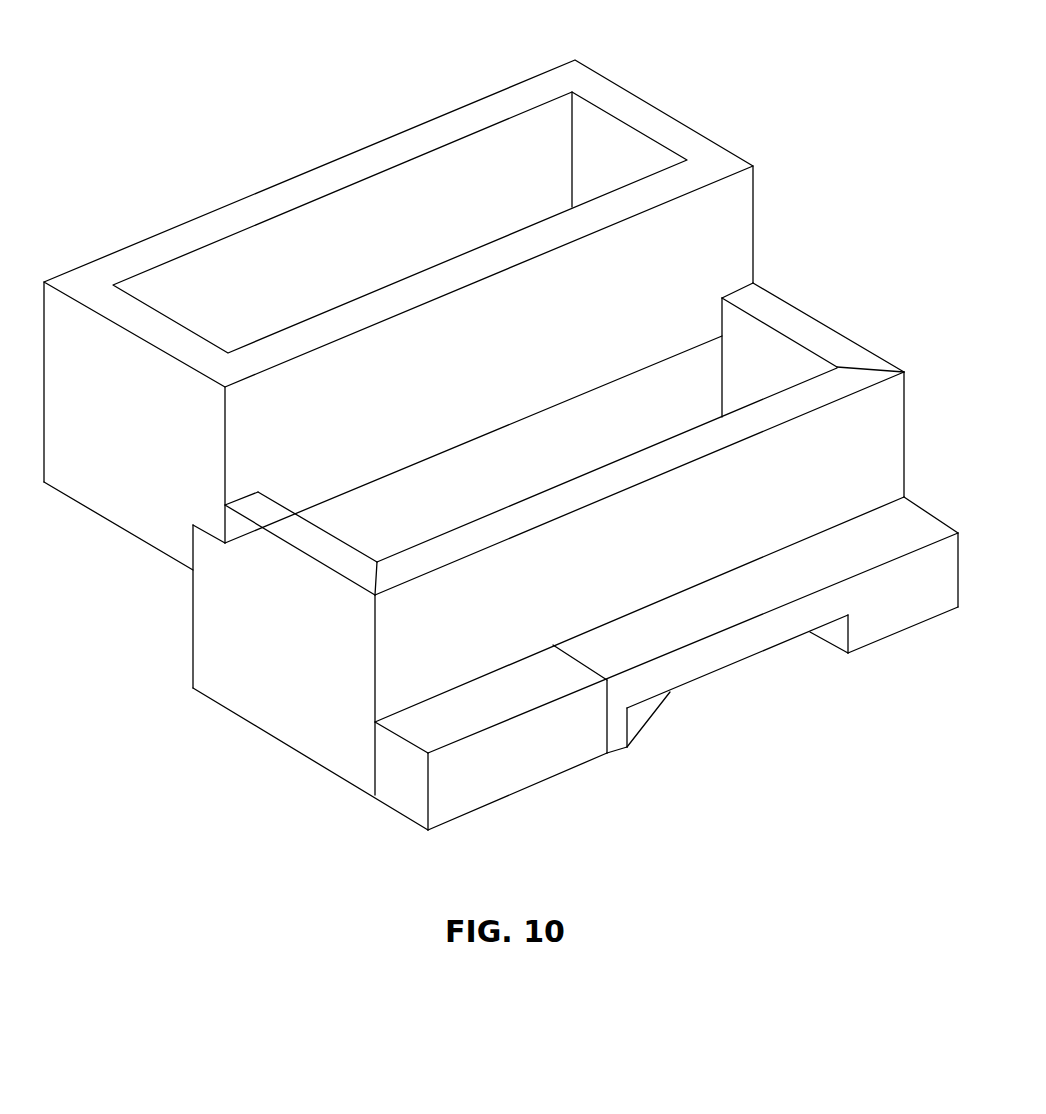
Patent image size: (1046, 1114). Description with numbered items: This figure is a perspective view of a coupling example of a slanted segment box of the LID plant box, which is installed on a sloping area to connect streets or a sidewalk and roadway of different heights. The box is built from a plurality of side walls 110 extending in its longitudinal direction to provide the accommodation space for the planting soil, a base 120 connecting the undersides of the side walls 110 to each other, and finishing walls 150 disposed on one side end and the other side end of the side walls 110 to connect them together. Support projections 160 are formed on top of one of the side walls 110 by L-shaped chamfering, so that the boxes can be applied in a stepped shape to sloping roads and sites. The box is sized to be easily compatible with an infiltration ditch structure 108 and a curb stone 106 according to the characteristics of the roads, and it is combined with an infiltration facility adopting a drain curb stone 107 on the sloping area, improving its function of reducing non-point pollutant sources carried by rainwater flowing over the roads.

The curb stone 106 is at (575, 687).
The drain curb stone 107 is at (884, 612).
The infiltration ditch structure 108 is at (398, 292).
The side walls 110 is at (834, 387).
The base 120 is at (473, 439).
The finishing walls 150 is at (564, 402).
The support projections 160 is at (156, 606).